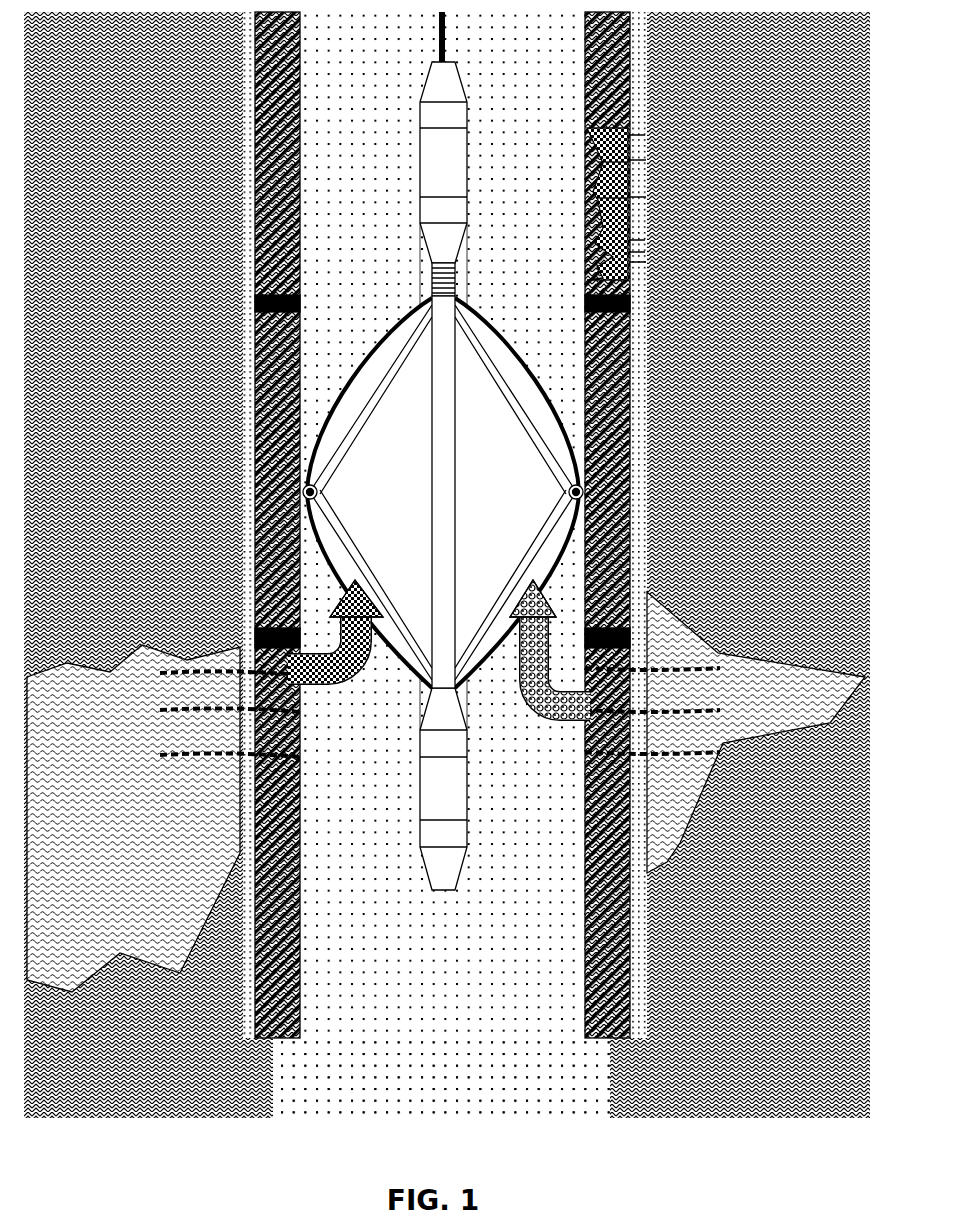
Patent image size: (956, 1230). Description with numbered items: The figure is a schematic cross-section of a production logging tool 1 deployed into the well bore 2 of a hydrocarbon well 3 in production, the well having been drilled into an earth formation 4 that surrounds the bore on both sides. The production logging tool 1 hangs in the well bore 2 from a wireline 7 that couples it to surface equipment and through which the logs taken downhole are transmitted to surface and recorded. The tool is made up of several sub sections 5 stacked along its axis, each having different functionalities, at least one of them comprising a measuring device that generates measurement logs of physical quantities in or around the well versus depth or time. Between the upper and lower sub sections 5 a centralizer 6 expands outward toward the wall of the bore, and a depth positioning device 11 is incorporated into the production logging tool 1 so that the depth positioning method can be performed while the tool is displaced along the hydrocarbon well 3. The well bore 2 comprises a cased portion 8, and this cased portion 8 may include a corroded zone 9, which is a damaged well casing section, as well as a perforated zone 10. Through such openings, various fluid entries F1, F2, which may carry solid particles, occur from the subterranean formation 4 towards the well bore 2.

The production logging tool 1 is at (443, 468).
The well bore 2 is at (356, 975).
The hydrocarbon well 3 is at (507, 1122).
The earth formation 4 is at (761, 66).
The sub sections 5 is at (450, 128).
The centralizer 6 is at (349, 371).
The wireline 7 is at (443, 28).
The cased portion 8 is at (585, 892).
The corroded zone 9 is at (590, 182).
The perforated zone 10 is at (300, 755).
The depth positioning device 11 is at (413, 207).
The fluid entry F1 is at (535, 697).
The fluid entry F2 is at (352, 668).